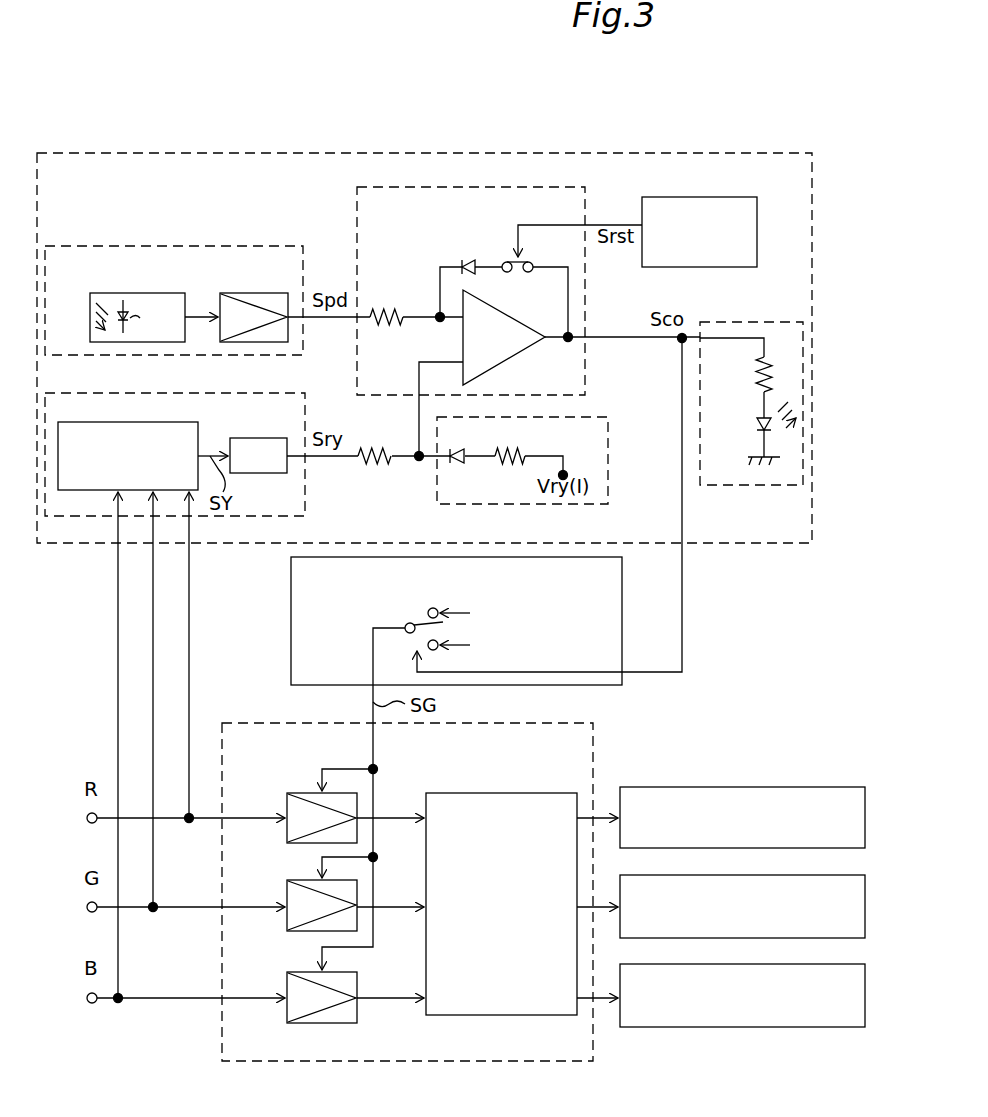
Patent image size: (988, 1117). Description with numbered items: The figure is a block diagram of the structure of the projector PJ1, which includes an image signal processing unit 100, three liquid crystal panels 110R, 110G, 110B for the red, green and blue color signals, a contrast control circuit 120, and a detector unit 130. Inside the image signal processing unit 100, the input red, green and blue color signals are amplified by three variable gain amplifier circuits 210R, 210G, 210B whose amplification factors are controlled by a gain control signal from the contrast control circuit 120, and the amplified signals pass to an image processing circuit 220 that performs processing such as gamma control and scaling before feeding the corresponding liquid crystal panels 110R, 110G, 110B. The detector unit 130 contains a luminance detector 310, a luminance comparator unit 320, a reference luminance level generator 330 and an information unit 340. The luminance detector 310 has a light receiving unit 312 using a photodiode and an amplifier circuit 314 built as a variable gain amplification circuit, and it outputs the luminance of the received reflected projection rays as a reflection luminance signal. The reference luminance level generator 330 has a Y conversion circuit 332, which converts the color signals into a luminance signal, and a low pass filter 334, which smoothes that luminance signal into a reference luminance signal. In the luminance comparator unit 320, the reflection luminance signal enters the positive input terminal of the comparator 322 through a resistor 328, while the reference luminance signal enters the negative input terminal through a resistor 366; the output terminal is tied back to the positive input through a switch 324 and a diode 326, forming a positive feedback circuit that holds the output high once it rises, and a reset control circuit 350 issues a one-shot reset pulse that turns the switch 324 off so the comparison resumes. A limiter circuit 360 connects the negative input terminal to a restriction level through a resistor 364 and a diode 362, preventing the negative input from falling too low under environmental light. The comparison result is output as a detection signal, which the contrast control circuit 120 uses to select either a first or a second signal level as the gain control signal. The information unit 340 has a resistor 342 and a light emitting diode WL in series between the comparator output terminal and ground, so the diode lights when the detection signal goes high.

The projector PJ1 is at (206, 56).
The detector unit 130 is at (283, 153).
The luminance detector 310 is at (164, 246).
The light receiving unit 312 is at (138, 293).
The amplifier circuit 314 is at (256, 293).
The luminance comparator unit 320 is at (357, 213).
The comparator 322 is at (517, 356).
The switch 324 is at (504, 253).
The diode 326 is at (462, 258).
The resistor 328 is at (389, 307).
The reference luminance level generator 330 is at (215, 393).
The Y conversion circuit 332 is at (137, 422).
The low pass filter 334 is at (259, 438).
The information unit 340 is at (752, 323).
The resistor 342 is at (750, 377).
The light emitting diode WL is at (757, 426).
The reset control circuit 350 is at (708, 197).
The limiter circuit 360 is at (594, 417).
The diode 362 is at (460, 464).
The resistor 364 is at (524, 455).
The resistor 366 is at (370, 472).
The contrast control circuit 120 is at (291, 600).
The image signal processing unit 100 is at (247, 720).
The amplifier circuit 210R is at (297, 792).
The amplifier circuit 210G is at (302, 880).
The amplifier circuit 210B is at (304, 972).
The image processing circuit 220 is at (509, 792).
The liquid crystal panel 110R is at (772, 787).
The liquid crystal panel 110G is at (772, 875).
The liquid crystal panel 110B is at (772, 964).